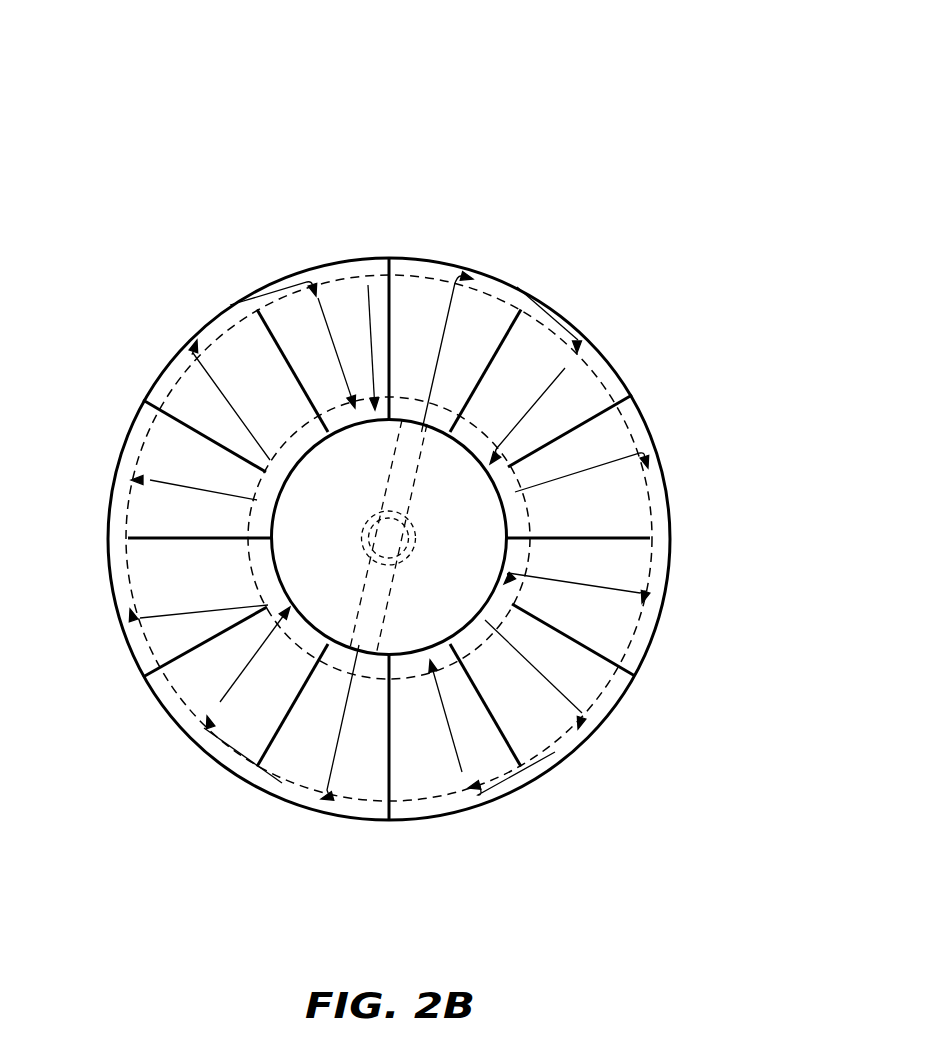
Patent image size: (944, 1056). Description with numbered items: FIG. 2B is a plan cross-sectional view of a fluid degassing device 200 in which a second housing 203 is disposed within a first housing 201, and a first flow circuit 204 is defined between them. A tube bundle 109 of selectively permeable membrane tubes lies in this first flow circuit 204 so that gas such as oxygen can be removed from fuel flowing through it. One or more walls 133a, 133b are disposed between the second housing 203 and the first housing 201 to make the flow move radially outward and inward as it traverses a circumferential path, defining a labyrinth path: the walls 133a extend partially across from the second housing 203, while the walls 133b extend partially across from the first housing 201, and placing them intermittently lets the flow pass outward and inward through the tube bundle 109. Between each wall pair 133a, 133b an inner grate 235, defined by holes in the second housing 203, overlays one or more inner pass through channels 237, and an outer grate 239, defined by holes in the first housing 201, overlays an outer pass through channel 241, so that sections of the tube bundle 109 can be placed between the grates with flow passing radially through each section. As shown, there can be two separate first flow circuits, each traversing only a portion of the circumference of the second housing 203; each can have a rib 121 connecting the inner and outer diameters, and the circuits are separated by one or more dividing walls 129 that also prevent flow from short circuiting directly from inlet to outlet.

The device 200 is at (228, 120).
The tube bundle 109 is at (475, 336).
The rib 121 is at (415, 495).
The divider wall 129 is at (394, 256).
The wall 133a is at (508, 342).
The wall 133b is at (632, 400).
The first housing 201 is at (668, 532).
The second housing 203 is at (507, 558).
The first flow circuit 204 is at (306, 565).
The inner grate 235 is at (270, 460).
The inner pass through channel 237 is at (300, 430).
The outer grate 239 is at (143, 426).
The outer pass through channel 241 is at (120, 465).